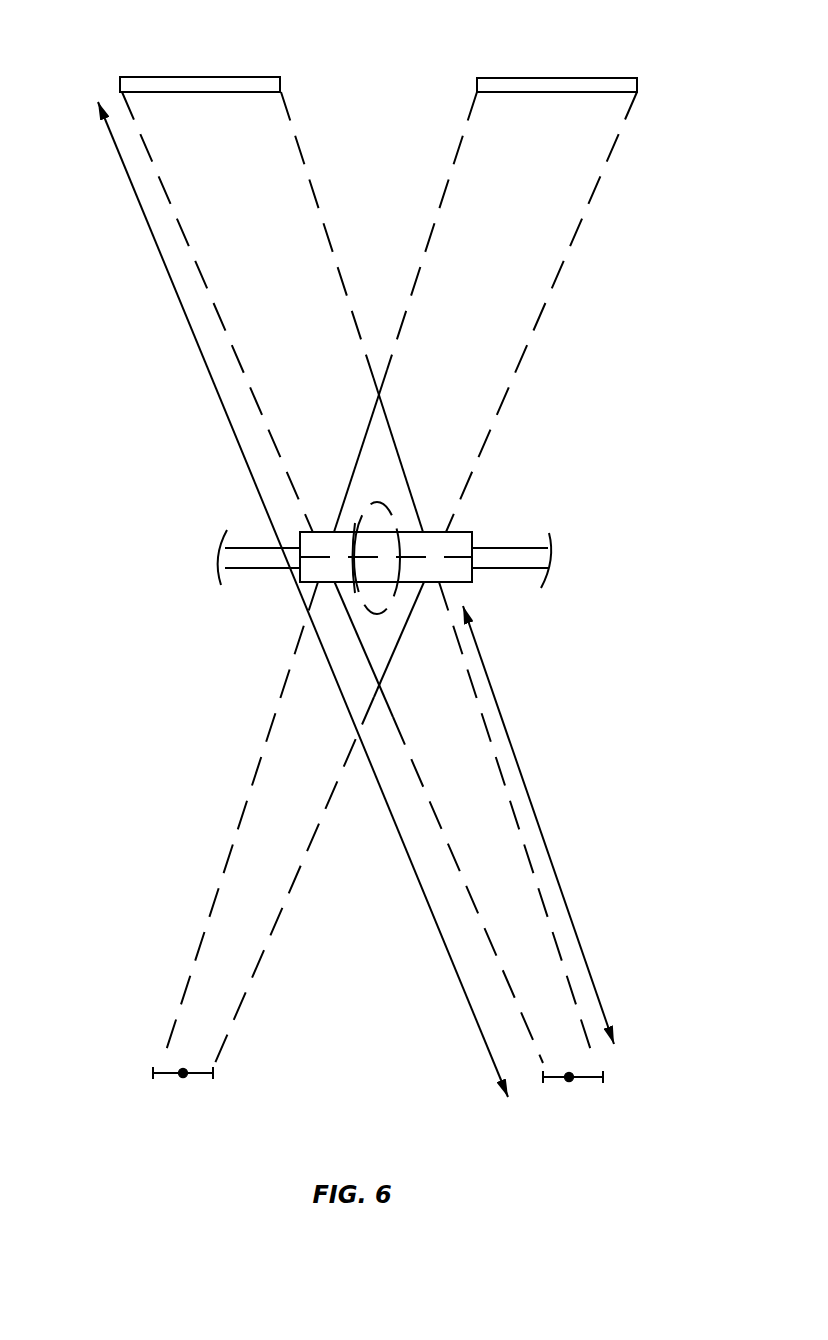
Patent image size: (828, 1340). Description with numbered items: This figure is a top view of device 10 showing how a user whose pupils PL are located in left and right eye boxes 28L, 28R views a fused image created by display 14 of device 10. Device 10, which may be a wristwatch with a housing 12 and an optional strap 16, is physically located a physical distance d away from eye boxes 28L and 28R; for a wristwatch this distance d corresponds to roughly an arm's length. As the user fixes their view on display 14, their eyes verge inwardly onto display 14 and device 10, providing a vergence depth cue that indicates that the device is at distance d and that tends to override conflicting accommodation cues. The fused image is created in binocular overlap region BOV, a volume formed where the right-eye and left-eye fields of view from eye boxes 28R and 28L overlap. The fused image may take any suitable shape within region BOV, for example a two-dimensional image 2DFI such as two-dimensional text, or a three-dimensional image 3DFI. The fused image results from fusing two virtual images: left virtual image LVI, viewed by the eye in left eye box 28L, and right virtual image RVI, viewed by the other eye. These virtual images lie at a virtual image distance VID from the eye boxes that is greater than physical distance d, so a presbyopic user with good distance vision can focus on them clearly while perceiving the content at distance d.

The device 10 is at (419, 526).
The housing 12 is at (474, 536).
The display 14 is at (348, 587).
The strap 16 is at (518, 562).
The left eye box 28L is at (213, 1080).
The right eye box 28R is at (603, 1074).
The right virtual image RVI is at (198, 77).
The left virtual image LVI is at (555, 78).
The virtual image distance VID is at (155, 245).
The binocular overlap region BOV is at (395, 432).
The two-dimensional image 2DFI is at (370, 542).
The three-dimensional image 3DFI is at (357, 524).
The pupils PL is at (183, 1078).
The physical distance d is at (538, 825).